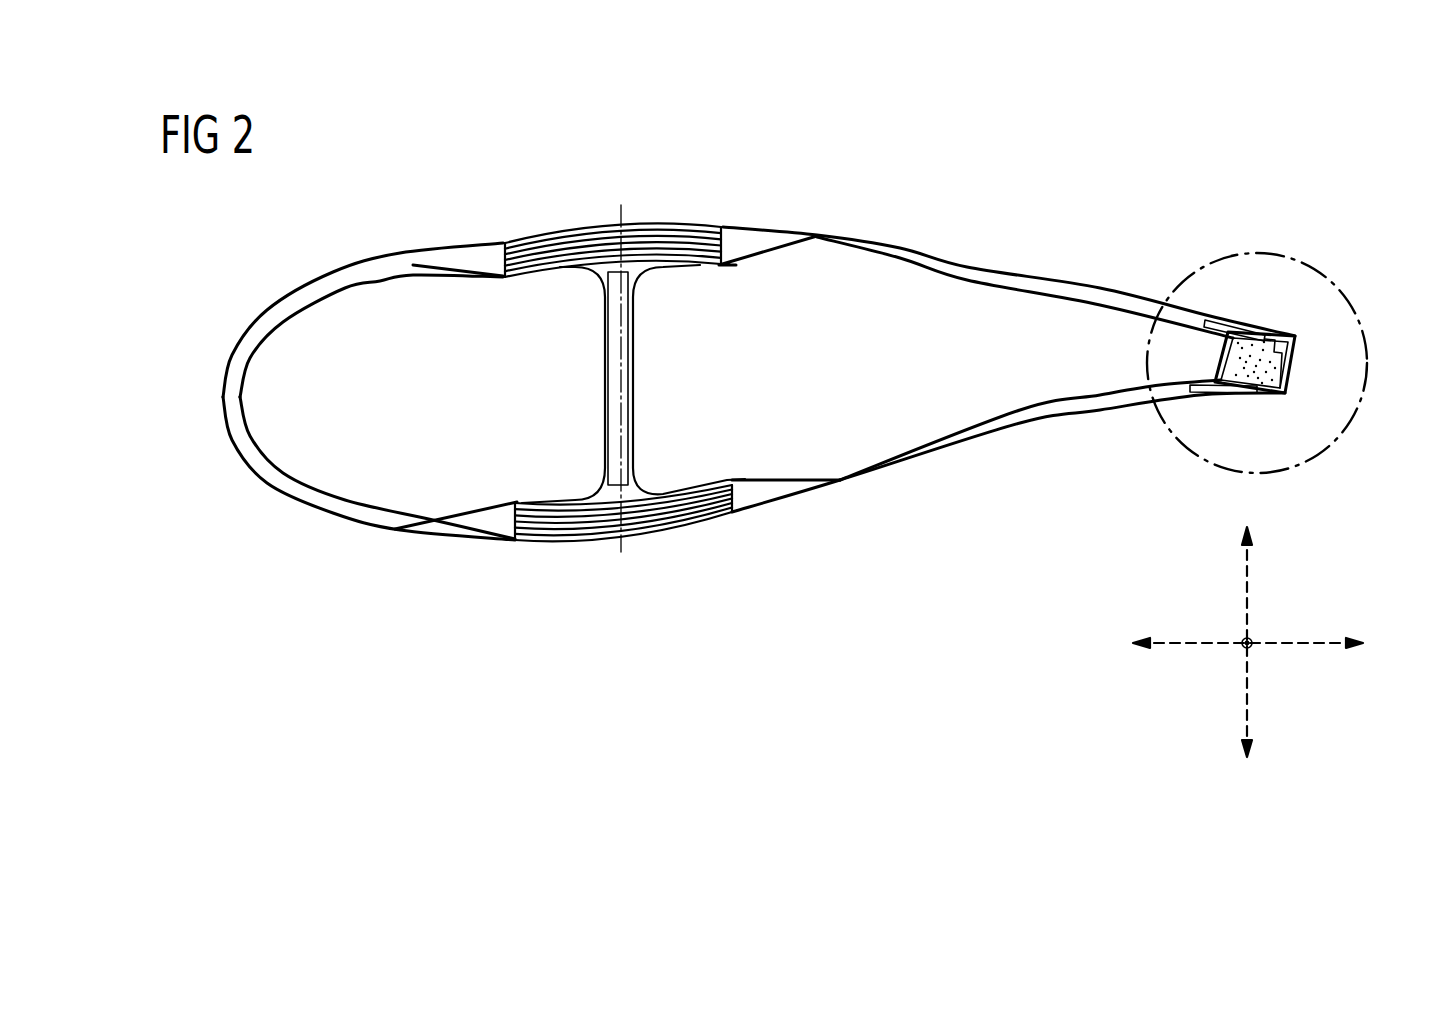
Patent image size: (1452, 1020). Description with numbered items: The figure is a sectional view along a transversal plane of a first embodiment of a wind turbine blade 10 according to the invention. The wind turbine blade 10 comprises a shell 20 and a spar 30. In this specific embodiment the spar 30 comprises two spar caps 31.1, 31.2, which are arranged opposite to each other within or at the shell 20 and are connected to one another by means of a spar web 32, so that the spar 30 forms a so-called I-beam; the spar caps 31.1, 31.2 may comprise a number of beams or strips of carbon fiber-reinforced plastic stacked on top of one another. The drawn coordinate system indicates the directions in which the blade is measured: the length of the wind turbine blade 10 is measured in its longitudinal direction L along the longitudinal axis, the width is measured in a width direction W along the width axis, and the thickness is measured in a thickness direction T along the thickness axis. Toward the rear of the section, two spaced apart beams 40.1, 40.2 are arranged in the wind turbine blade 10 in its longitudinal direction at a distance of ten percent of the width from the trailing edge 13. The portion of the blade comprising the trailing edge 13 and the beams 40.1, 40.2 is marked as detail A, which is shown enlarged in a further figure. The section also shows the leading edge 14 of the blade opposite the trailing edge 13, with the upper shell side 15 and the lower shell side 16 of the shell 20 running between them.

The wind turbine blade 10 is at (784, 372).
The trailing edge 13 is at (1300, 362).
The leading edge 14 is at (226, 414).
The suction side shell 15 is at (759, 281).
The pressure side shell 16 is at (887, 466).
The shell 20 is at (1020, 268).
The spar 30 is at (605, 372).
The spar cap 31.1 is at (648, 226).
The spar cap 31.2 is at (582, 540).
The spar web 32 is at (604, 390).
The beam 40.1 is at (1263, 301).
The beam 40.2 is at (1223, 394).
The detail A is at (1320, 278).
The thickness direction T is at (1249, 582).
The width direction W is at (1206, 645).
The longitudinal direction L is at (1250, 646).